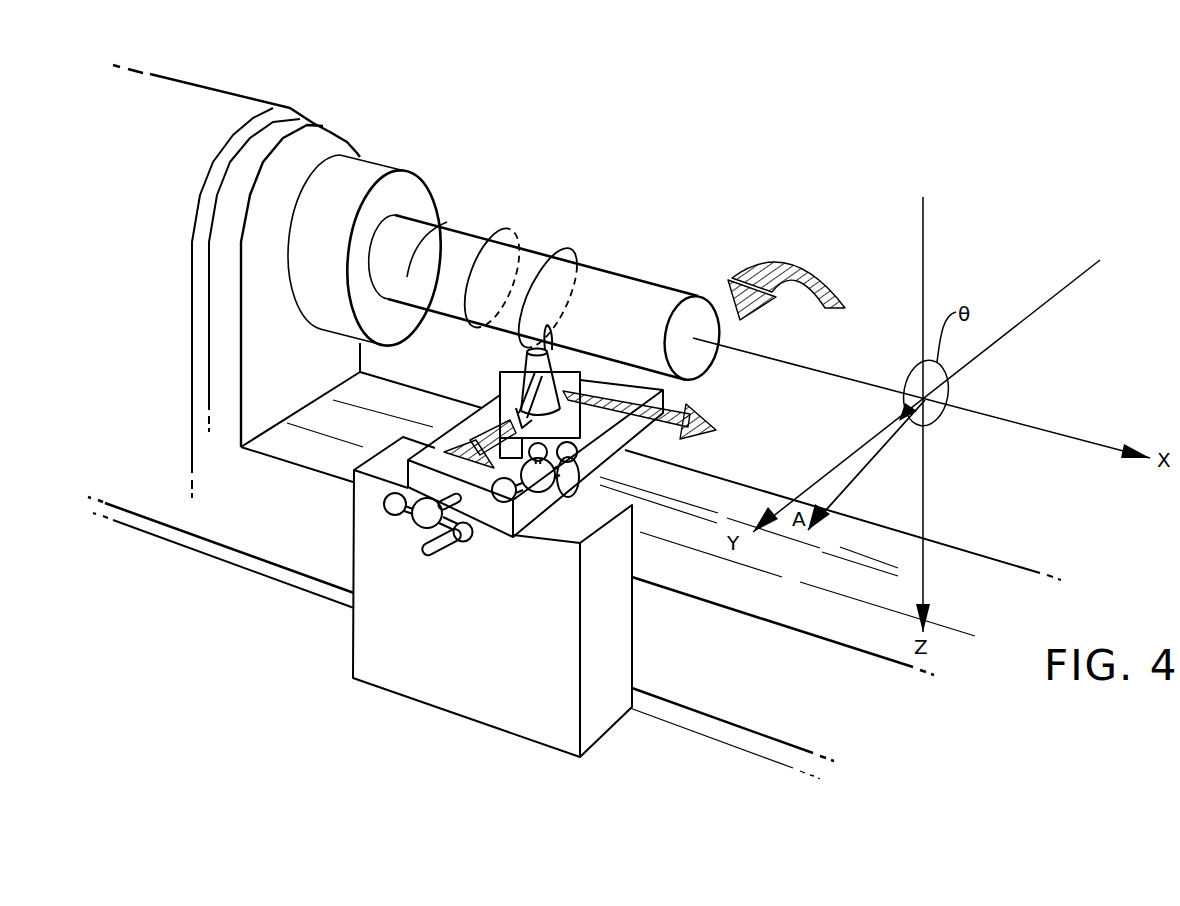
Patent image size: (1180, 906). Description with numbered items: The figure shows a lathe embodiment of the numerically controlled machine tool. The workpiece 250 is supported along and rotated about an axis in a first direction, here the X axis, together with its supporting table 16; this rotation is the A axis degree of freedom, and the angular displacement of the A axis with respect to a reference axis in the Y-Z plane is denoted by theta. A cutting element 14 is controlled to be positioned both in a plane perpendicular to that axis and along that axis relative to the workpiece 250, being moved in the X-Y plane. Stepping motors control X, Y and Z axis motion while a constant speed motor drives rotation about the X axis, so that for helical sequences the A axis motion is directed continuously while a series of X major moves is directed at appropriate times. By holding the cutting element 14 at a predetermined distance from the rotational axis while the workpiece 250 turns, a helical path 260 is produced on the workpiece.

The workpiece positioning table 16 is at (370, 160).
The helical path 260 is at (494, 245).
The workpiece 250 is at (640, 275).
The cutting element 14 is at (556, 334).